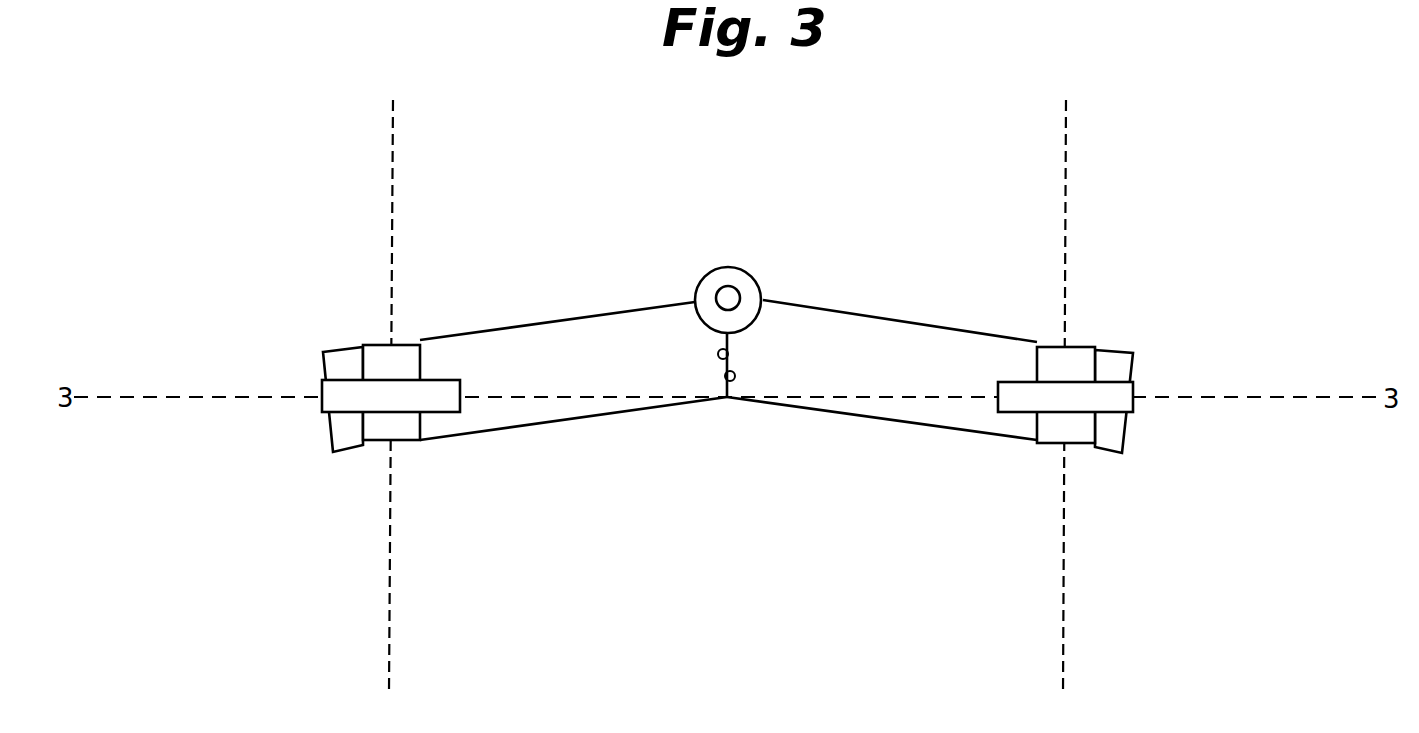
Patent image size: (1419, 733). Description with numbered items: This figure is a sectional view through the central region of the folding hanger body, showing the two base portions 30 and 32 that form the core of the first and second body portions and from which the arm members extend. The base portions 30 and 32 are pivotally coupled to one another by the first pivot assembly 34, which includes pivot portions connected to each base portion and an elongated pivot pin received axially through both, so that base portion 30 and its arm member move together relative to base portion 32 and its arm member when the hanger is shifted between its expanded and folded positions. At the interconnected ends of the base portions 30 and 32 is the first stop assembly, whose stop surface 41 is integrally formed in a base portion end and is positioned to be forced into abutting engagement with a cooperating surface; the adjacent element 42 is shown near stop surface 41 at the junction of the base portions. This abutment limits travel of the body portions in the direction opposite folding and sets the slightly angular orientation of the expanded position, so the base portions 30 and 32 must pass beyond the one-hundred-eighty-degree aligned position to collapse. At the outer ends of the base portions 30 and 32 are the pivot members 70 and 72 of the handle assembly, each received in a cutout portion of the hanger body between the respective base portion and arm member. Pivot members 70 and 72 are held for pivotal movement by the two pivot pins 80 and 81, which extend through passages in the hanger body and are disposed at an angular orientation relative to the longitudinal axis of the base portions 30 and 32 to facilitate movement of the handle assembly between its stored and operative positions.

The base portion 30 is at (933, 430).
The base portion 32 is at (567, 422).
The first pivot assembly 34 is at (737, 258).
The stop surface 41 is at (728, 355).
The second loop 42 is at (725, 378).
The pivot member 70 is at (1047, 443).
The pivot member 72 is at (403, 440).
The pivot pin 80 is at (1135, 405).
The pivot pin 81 is at (321, 403).